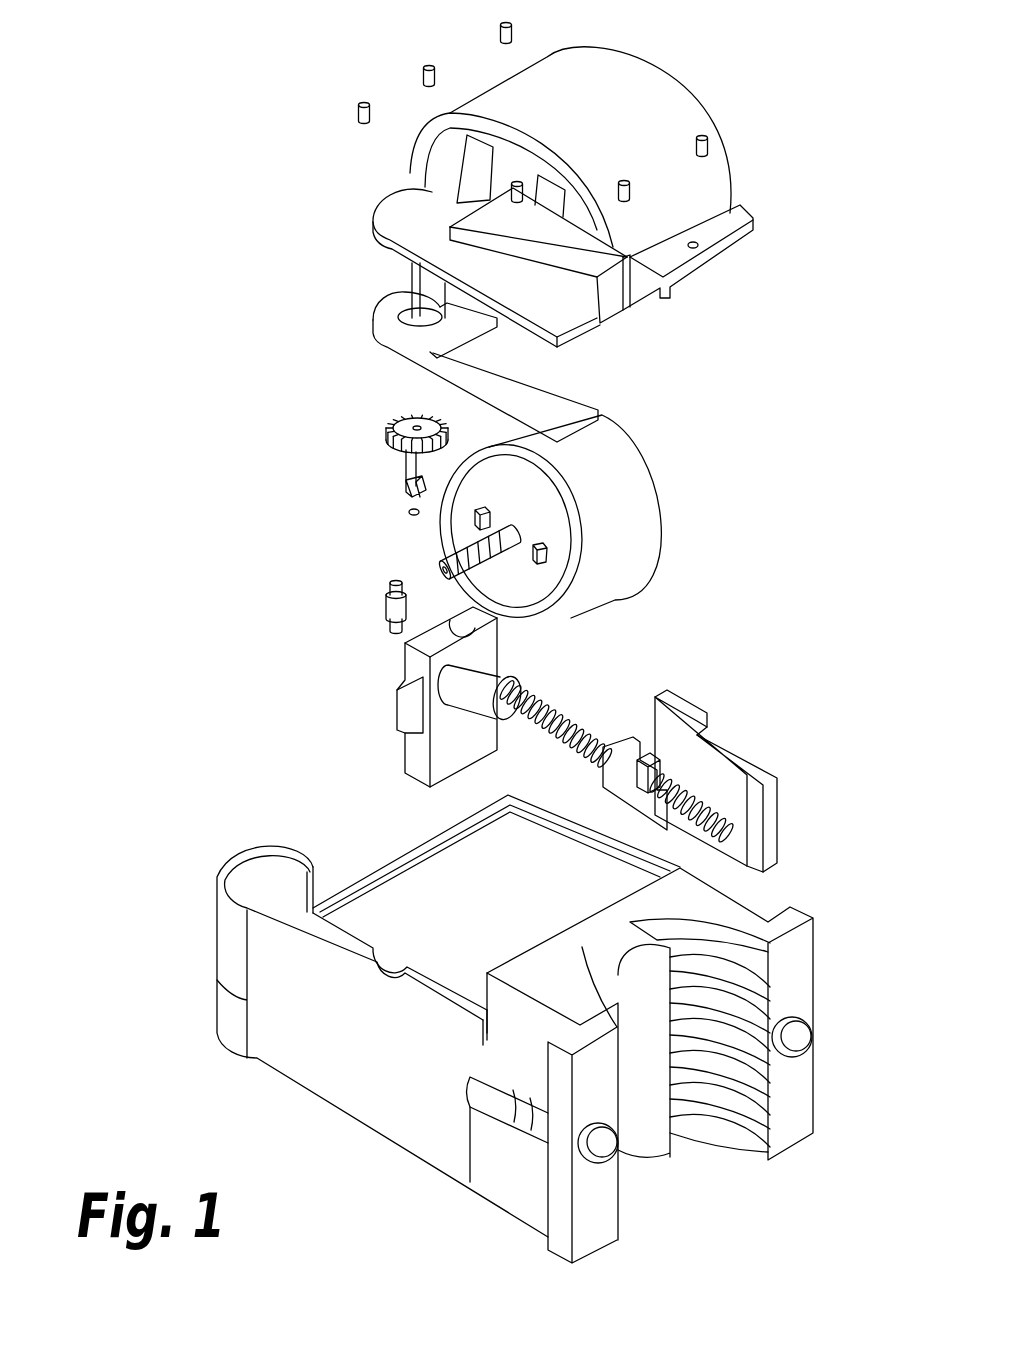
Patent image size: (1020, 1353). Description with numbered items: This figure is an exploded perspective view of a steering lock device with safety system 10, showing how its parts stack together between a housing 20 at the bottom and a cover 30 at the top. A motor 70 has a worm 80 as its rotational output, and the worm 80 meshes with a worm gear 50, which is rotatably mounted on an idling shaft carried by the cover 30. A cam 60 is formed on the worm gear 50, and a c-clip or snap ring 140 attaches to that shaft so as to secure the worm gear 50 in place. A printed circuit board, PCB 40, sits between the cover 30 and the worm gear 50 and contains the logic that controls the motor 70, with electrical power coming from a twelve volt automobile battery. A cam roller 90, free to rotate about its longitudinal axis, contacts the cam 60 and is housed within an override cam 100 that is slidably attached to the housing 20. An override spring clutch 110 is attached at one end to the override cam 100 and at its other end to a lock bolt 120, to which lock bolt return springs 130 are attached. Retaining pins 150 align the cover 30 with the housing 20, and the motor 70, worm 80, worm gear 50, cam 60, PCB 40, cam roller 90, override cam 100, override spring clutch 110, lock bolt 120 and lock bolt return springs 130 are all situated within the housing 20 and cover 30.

The steering lock device with safety system 10 is at (860, 519).
The housing 20 is at (315, 1083).
The cover 30 is at (388, 215).
The printed circuit board (PCB) 40 is at (373, 337).
The worm gear 50 is at (387, 433).
The cam 60 is at (420, 486).
The motor 70 is at (653, 533).
The worm 80 is at (443, 547).
The cam roller 90 is at (387, 613).
The override cam 100 is at (480, 620).
The override spring clutch 110 is at (563, 715).
The lock bolt 120 is at (733, 746).
The lock bolt return springs 130 is at (723, 823).
The c-clip or snap ring 140 is at (408, 512).
The retaining pins 150 is at (498, 32).